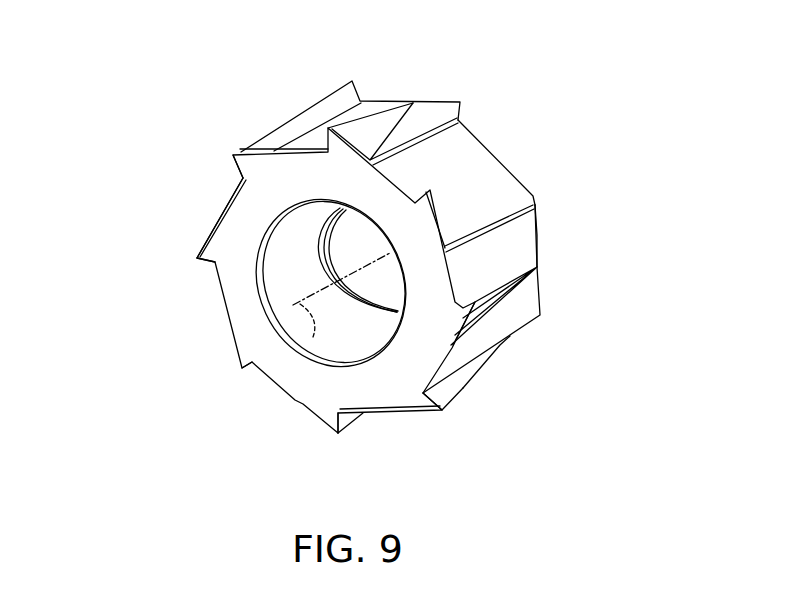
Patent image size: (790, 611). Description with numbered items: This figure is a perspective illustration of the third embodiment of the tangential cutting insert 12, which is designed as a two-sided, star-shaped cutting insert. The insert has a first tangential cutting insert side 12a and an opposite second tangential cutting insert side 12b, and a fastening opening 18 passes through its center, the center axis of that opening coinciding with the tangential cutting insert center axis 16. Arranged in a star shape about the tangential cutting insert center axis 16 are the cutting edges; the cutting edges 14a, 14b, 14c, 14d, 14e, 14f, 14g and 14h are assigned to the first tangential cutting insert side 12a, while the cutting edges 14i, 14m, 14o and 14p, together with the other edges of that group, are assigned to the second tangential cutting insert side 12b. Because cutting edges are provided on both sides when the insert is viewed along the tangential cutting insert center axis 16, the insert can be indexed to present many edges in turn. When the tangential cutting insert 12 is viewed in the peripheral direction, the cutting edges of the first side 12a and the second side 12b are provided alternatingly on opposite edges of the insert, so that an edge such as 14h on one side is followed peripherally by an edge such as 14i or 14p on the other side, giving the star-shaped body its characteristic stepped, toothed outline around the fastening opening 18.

The tangential cutting insert 12 is at (336, 280).
The first tangential cutting insert side 12a is at (251, 213).
The second tangential cutting insert side 12b is at (482, 131).
The cutting edge 14a is at (231, 155).
The cutting edge 14b is at (197, 257).
The cutting edge 14c is at (241, 370).
The cutting edge 14d is at (340, 436).
The cutting edge 14e is at (443, 410).
The cutting edge 14f is at (472, 295).
The cutting edge 14g is at (427, 192).
The cutting edge 14h is at (363, 100).
The cutting edge 14i is at (350, 80).
The cutting edge 14m is at (462, 390).
The cutting edge 14o is at (537, 201).
The cutting edge 14p is at (460, 102).
The tangential cutting insert center axis 16 is at (297, 330).
The fastening opening 18 is at (343, 343).